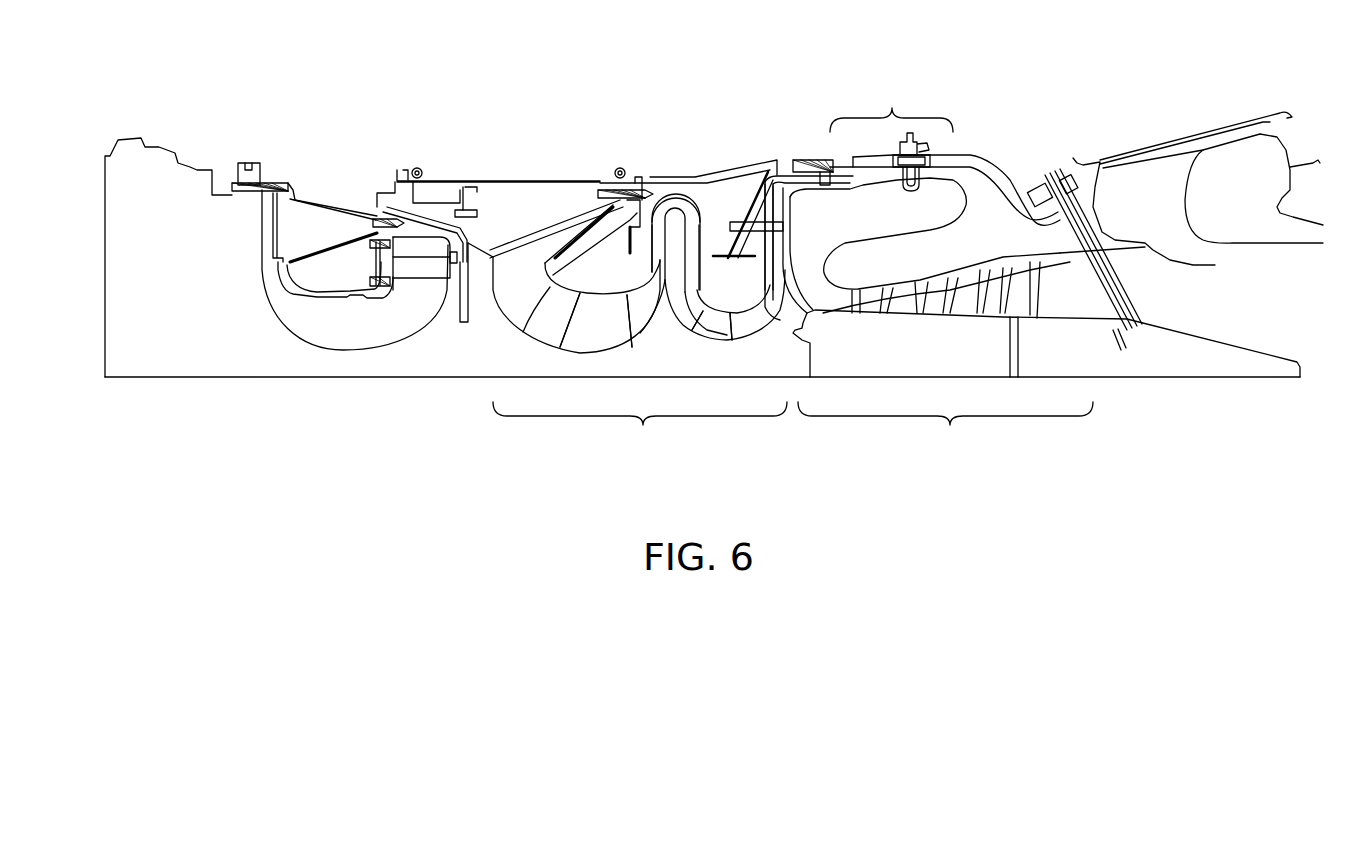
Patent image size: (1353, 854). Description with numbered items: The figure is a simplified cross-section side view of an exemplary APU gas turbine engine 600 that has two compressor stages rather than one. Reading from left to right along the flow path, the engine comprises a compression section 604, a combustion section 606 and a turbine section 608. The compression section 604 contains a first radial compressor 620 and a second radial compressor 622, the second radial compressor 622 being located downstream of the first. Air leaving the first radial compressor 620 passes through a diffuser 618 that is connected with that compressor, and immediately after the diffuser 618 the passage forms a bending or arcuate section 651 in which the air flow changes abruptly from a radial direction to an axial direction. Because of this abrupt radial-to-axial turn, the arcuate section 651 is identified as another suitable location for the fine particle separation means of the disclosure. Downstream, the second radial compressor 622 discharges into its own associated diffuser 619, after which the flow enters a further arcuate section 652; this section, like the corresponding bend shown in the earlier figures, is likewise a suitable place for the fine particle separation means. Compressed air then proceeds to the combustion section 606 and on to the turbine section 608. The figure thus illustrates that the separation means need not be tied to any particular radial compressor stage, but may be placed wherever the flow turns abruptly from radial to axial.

The gas turbine engine 600 is at (199, 98).
The compressor section 604 is at (640, 432).
The combustion section 606 is at (891, 134).
The turbine section 608 is at (945, 432).
The diffuser 618 is at (652, 262).
The diffuser 619 is at (766, 277).
The first radial compressor 620 is at (622, 336).
The second radial compressor 622 is at (722, 334).
The bending or arcuate section 651 is at (678, 197).
The arcuate section 652 is at (777, 178).